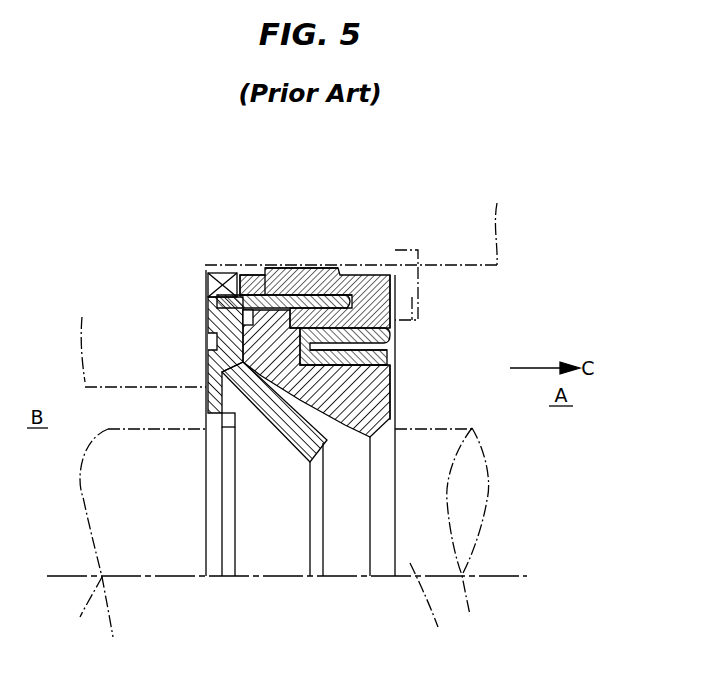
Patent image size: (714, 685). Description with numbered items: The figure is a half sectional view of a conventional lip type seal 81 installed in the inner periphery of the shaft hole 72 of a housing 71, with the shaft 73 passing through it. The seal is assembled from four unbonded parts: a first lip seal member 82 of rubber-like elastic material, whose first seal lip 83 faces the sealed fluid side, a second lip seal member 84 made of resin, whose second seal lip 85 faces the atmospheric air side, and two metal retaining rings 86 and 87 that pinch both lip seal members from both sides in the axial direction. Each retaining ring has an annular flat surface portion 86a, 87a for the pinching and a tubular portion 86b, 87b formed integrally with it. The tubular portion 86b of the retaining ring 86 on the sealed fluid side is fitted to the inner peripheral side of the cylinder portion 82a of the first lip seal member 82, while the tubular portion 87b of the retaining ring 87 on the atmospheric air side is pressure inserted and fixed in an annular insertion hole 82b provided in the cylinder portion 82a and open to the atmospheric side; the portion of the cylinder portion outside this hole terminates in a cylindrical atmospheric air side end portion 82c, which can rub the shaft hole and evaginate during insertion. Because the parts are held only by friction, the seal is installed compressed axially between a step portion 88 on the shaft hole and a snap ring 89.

The housing 71 is at (495, 207).
The shaft hole 72 is at (482, 283).
The shaft 73 is at (287, 540).
The lip type seal 81 is at (486, 333).
The first lip seal member 82 is at (373, 275).
The cylinder portion 82a is at (318, 272).
The insertion hole 82b is at (300, 296).
The atmospheric air side end portion 82c is at (244, 276).
The first seal lip 83 is at (380, 417).
The second lip seal member 84 is at (244, 428).
The second seal lip 85 is at (300, 462).
The retaining ring 86 is at (394, 334).
The annular flat surface portion 86a is at (393, 290).
The tubular portion 86b is at (388, 357).
The retaining ring 87 is at (215, 320).
The annular flat surface portion 87a is at (206, 358).
The tubular portion 87b is at (250, 294).
The step portion 88 is at (218, 272).
The snap ring 89 is at (414, 297).